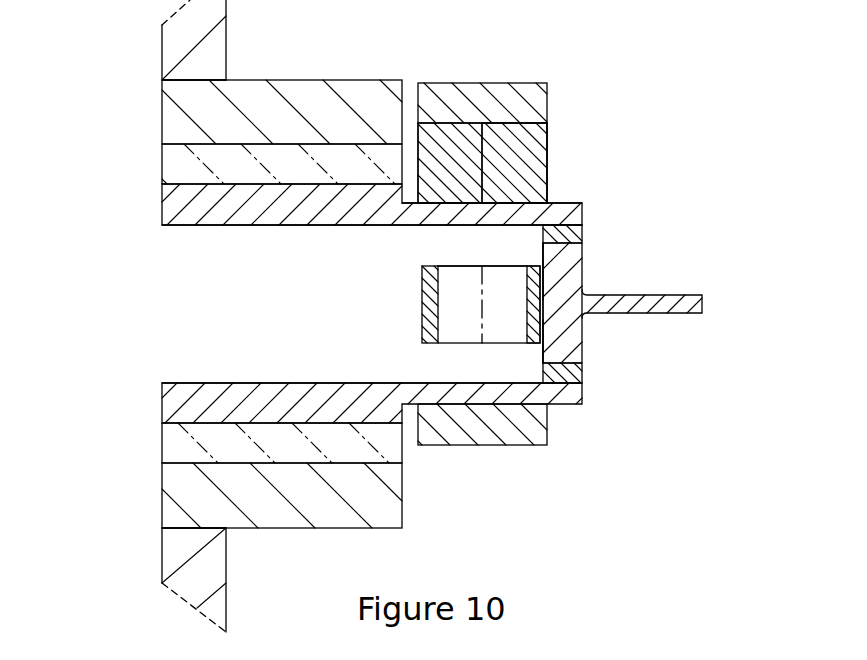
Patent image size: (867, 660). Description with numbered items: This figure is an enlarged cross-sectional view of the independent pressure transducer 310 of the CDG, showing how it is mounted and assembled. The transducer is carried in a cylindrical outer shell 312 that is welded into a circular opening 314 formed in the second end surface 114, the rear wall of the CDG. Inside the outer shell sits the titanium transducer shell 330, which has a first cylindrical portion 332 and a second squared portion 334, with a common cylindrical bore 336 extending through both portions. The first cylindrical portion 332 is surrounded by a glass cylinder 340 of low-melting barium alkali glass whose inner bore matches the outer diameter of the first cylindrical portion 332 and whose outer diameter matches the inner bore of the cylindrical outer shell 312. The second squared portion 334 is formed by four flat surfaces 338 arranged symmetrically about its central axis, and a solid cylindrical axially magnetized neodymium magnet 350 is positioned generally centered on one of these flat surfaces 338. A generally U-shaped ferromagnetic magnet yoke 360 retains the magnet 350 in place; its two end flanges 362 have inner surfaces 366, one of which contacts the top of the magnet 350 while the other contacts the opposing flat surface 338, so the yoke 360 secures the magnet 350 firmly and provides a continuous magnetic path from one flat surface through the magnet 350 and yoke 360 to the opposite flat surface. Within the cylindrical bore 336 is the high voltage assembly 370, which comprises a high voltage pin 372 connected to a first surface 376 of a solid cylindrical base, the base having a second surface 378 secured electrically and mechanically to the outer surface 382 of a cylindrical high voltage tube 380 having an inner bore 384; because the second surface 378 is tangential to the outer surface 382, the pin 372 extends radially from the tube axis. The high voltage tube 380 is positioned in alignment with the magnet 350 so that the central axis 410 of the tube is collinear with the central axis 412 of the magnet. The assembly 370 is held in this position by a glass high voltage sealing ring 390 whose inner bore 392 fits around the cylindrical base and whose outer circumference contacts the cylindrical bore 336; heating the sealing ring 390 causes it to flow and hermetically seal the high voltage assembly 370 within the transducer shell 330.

The second end surface 114 is at (226, 50).
The independent pressure transducer 310 is at (730, 349).
The cylindrical outer shell 312 is at (313, 93).
The circular opening 314 is at (165, 88).
The transducer shell 330 is at (160, 211).
The first cylindrical portion 332 is at (183, 227).
The second squared portion 334 is at (568, 404).
The cylindrical bore 336 is at (188, 382).
The flat surfaces 338 is at (518, 203).
The glass cylinder 340 is at (160, 158).
The magnet 350 is at (528, 155).
The magnet yoke 360 is at (483, 83).
The end flanges 362 is at (518, 98).
The inner surfaces 366 is at (533, 137).
The high voltage assembly 370 is at (567, 327).
The high voltage pin 372 is at (647, 293).
The first surface 376 is at (583, 283).
The second surface 378 is at (543, 258).
The high voltage tube 380 is at (427, 327).
The outer surface 382 is at (422, 283).
The inner bore 384 is at (440, 287).
The high voltage sealing ring 390 is at (558, 232).
The inner bore 392 is at (543, 358).
The central axis 410 is at (482, 288).
The central axis 412 is at (482, 168).